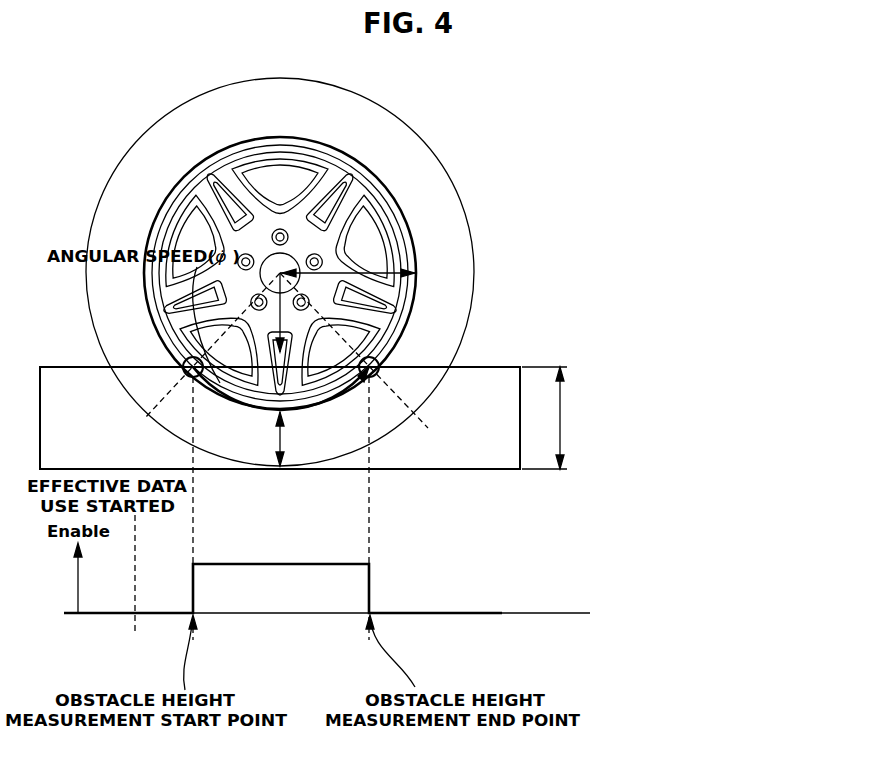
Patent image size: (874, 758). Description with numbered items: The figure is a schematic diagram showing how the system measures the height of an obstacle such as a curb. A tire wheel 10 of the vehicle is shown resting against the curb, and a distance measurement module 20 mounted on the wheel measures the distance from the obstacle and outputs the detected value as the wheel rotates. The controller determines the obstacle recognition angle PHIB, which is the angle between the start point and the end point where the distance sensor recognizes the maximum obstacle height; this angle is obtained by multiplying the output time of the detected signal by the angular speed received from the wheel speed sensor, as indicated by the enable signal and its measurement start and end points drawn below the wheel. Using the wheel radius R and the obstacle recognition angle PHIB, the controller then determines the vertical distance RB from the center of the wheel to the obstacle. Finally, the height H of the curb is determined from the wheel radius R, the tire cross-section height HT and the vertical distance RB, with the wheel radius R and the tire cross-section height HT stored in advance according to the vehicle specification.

The tire wheel 10 is at (218, 170).
The distance measurement module 20 is at (185, 360).
The wheel radius R is at (377, 273).
The vertical distance from the center of the wheel to the obstacle RB is at (283, 332).
The obstacle recognition angle PHIB is at (313, 309).
The height of the obstacle H is at (642, 418).
The tire cross-section height HT is at (282, 438).